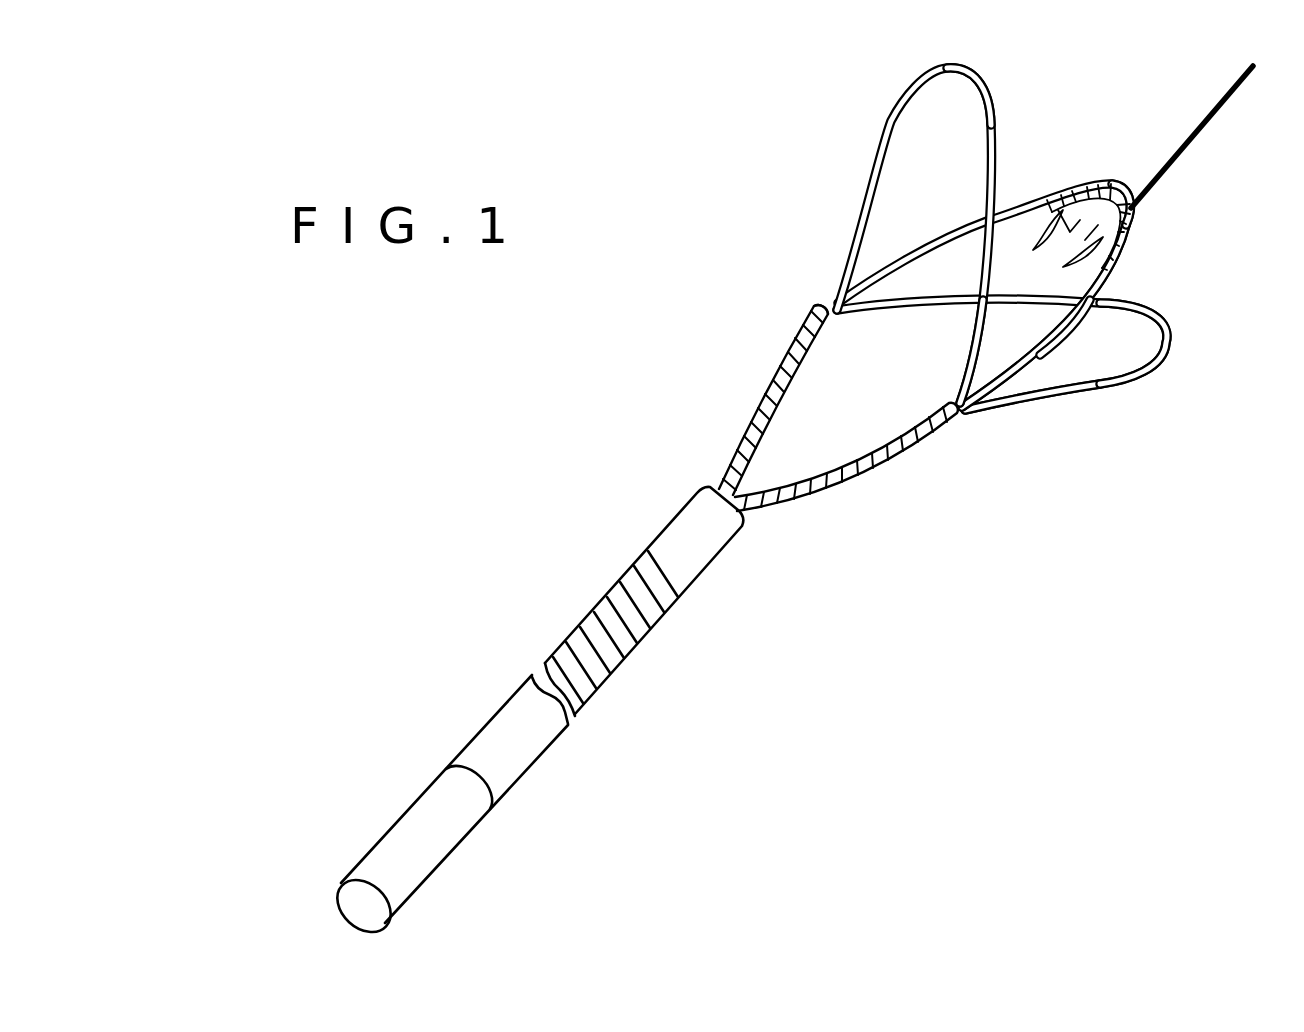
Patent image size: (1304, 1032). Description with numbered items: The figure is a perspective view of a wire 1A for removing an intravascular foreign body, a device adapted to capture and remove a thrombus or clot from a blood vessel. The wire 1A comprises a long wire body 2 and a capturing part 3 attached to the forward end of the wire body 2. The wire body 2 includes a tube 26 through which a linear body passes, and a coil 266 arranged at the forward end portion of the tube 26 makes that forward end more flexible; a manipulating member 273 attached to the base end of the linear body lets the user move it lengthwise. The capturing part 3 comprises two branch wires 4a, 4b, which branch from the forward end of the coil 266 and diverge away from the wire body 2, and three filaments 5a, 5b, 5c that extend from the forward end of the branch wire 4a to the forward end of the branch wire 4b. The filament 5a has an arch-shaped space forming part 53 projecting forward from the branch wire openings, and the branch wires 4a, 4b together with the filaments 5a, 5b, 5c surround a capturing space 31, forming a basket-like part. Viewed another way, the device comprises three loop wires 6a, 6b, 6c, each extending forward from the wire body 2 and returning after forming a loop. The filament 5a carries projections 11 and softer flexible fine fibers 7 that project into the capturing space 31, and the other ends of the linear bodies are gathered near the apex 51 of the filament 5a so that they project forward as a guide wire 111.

The wire for removing an intravascular foreign body 1A is at (1088, 95).
The wire body 2 is at (567, 742).
The tube 26 is at (506, 809).
The manipulating member 273 is at (435, 842).
The coil 266 is at (648, 610).
The capturing part 3 is at (789, 312).
The branch wire 4a is at (763, 405).
The branch wire 4b is at (857, 467).
The filament 5a is at (1030, 203).
The filament 5b is at (890, 123).
The filament 5c is at (1103, 383).
The apex 51 is at (978, 66).
The space forming part 53 is at (1065, 328).
The loop wire 6a is at (1008, 380).
The loop wire 6b is at (972, 355).
The loop wire 6c is at (1057, 392).
The fine fiber 7 is at (1090, 250).
The projection 11 is at (1033, 250).
The capturing space 31 is at (947, 273).
The guide wire 111 is at (1213, 110).